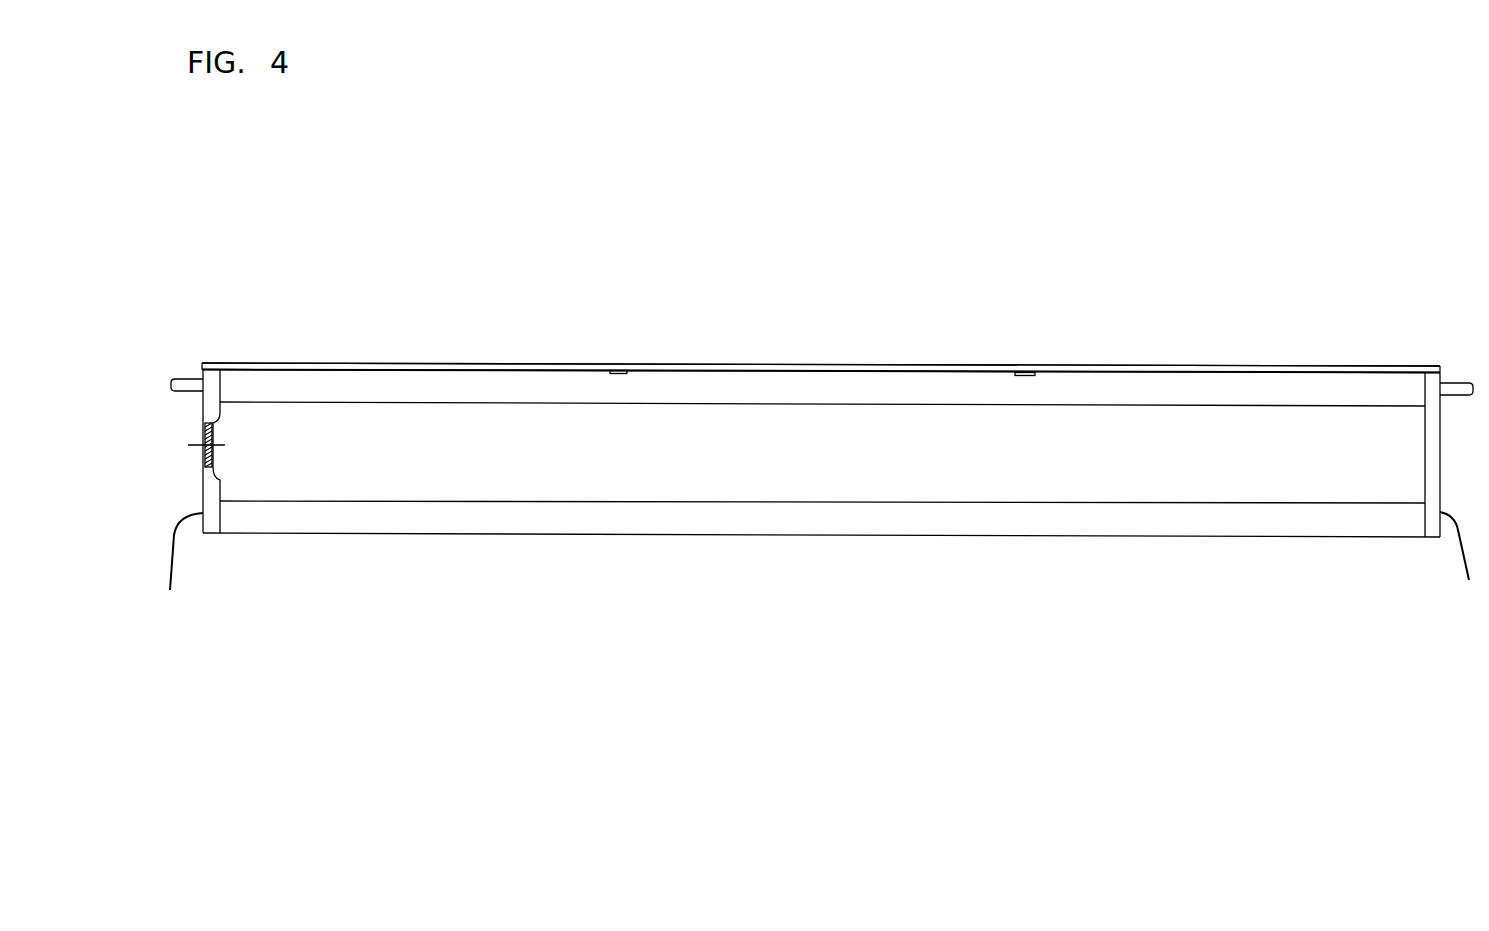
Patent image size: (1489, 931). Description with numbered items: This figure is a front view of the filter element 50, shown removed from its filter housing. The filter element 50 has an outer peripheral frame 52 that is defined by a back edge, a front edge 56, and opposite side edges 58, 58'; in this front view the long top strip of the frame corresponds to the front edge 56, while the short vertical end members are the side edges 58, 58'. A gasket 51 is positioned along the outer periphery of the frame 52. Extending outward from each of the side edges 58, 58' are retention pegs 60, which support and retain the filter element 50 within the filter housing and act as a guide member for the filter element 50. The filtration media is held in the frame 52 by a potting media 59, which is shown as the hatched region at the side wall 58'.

The filter element 50 is at (820, 373).
The gasket 51 is at (392, 363).
The outer peripheral frame 52 is at (962, 354).
The front edge 56 is at (553, 365).
The side edge 58 is at (1463, 564).
The side edge 58' is at (177, 568).
The potting media 59 is at (223, 422).
The retention pegs 60 is at (177, 363).